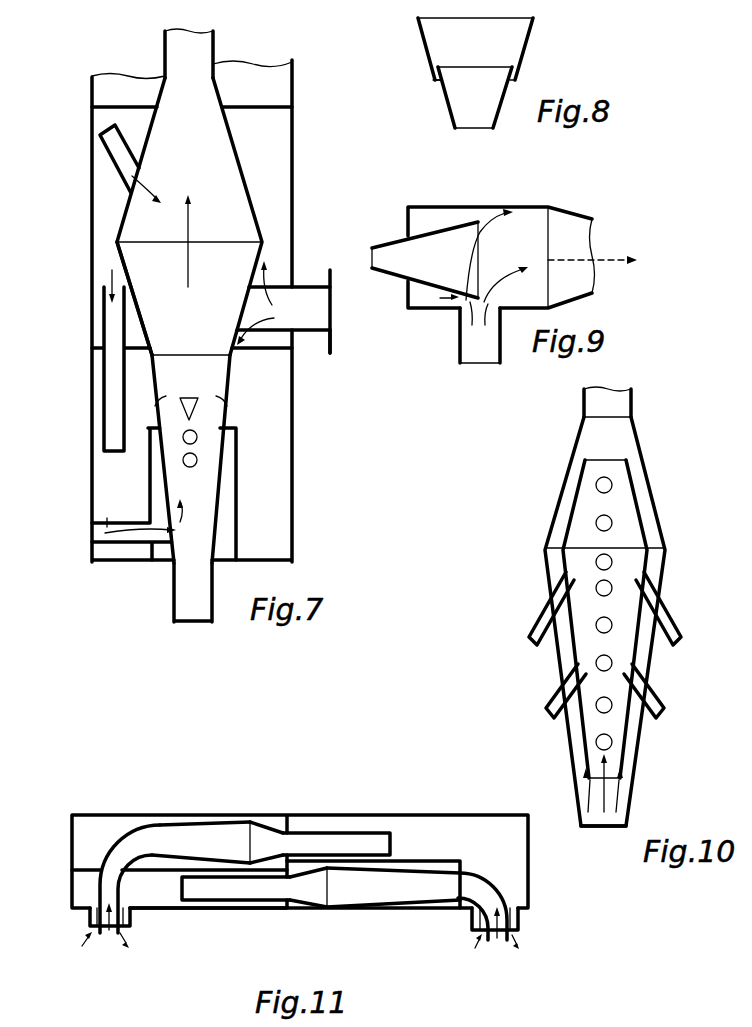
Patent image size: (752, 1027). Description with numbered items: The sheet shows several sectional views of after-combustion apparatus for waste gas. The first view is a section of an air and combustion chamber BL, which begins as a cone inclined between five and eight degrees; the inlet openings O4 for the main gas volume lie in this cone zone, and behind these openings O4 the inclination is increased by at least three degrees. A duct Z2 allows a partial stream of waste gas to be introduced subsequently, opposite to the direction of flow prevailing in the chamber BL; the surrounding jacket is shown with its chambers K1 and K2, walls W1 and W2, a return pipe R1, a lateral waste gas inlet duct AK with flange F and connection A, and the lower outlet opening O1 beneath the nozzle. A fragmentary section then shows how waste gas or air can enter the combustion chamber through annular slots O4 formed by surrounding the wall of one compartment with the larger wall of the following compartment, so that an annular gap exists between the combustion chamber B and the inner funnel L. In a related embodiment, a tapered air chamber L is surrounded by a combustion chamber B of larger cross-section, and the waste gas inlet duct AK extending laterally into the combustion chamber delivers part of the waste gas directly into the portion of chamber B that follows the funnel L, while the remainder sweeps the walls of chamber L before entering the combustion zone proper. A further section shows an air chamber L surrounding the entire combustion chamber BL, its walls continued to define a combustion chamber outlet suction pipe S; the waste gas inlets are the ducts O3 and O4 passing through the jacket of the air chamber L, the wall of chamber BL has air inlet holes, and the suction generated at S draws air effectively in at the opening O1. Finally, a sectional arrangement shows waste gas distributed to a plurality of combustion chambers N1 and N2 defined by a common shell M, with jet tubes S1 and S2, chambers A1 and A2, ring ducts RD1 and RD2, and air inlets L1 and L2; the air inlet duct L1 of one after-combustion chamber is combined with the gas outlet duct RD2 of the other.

In FIG. 7, the combustion chamber outlet suction pipe S is at (191, 68).
In FIG. 10, the combustion chamber outlet suction pipe S is at (614, 416).
In FIG. 11, the combustion chamber outlet suction pipe S is at (122, 894).
In FIG. 7, the common shell M is at (294, 90).
In FIG. 9, the common shell M is at (415, 224).
In FIG. 11, the common shell M is at (70, 838).
In FIG. 7, the duct Z2 is at (112, 152).
In FIG. 7, the upper chamber K1 is at (285, 200).
In FIG. 11, the upper chamber K1 is at (100, 825).
In FIG. 7, the upper wall W2 is at (130, 282).
In FIG. 7, the air and combustion chamber BL is at (206, 326).
In FIG. 10, the air and combustion chamber BL is at (644, 581).
In FIG. 7, the waste gas inlet duct AK is at (322, 320).
In FIG. 9, the waste gas inlet duct AK is at (478, 355).
In FIG. 7, the flange F is at (333, 280).
In FIG. 7, the outlet connection A is at (333, 318).
In FIG. 7, the return pipe R1 is at (112, 403).
In FIG. 7, the nozzle wall W1 is at (153, 372).
In FIG. 7, the inlet openings O4 is at (190, 396).
In FIG. 8, the inlet openings O4 is at (438, 83).
In FIG. 10, the inlet openings O4 is at (672, 628).
In FIG. 7, the ducts O3 is at (165, 458).
In FIG. 10, the ducts O3 is at (657, 692).
In FIG. 7, the opening O1 is at (195, 561).
In FIG. 10, the opening O1 is at (603, 828).
In FIG. 7, the lower chamber K2 is at (276, 417).
In FIG. 11, the lower chamber K2 is at (447, 907).
In FIG. 8, the combustion chamber B is at (512, 39).
In FIG. 9, the combustion chamber B is at (576, 287).
In FIG. 8, the air chamber L is at (480, 117).
In FIG. 9, the air chamber L is at (410, 270).
In FIG. 10, the air chamber L is at (632, 732).
In FIG. 11, the combustion chamber N1 is at (218, 840).
In FIG. 11, the combustion chamber N2 is at (368, 892).
In FIG. 11, the jet tube S1 is at (332, 842).
In FIG. 11, the jet tube S2 is at (215, 892).
In FIG. 11, the chamber A1 is at (168, 902).
In FIG. 11, the chamber A2 is at (453, 827).
In FIG. 11, the ring duct RD1 is at (477, 932).
In FIG. 11, the gas outlet duct RD2 is at (88, 928).
In FIG. 11, the air inlet duct L1 is at (117, 936).
In FIG. 11, the air inlet L2 is at (498, 938).